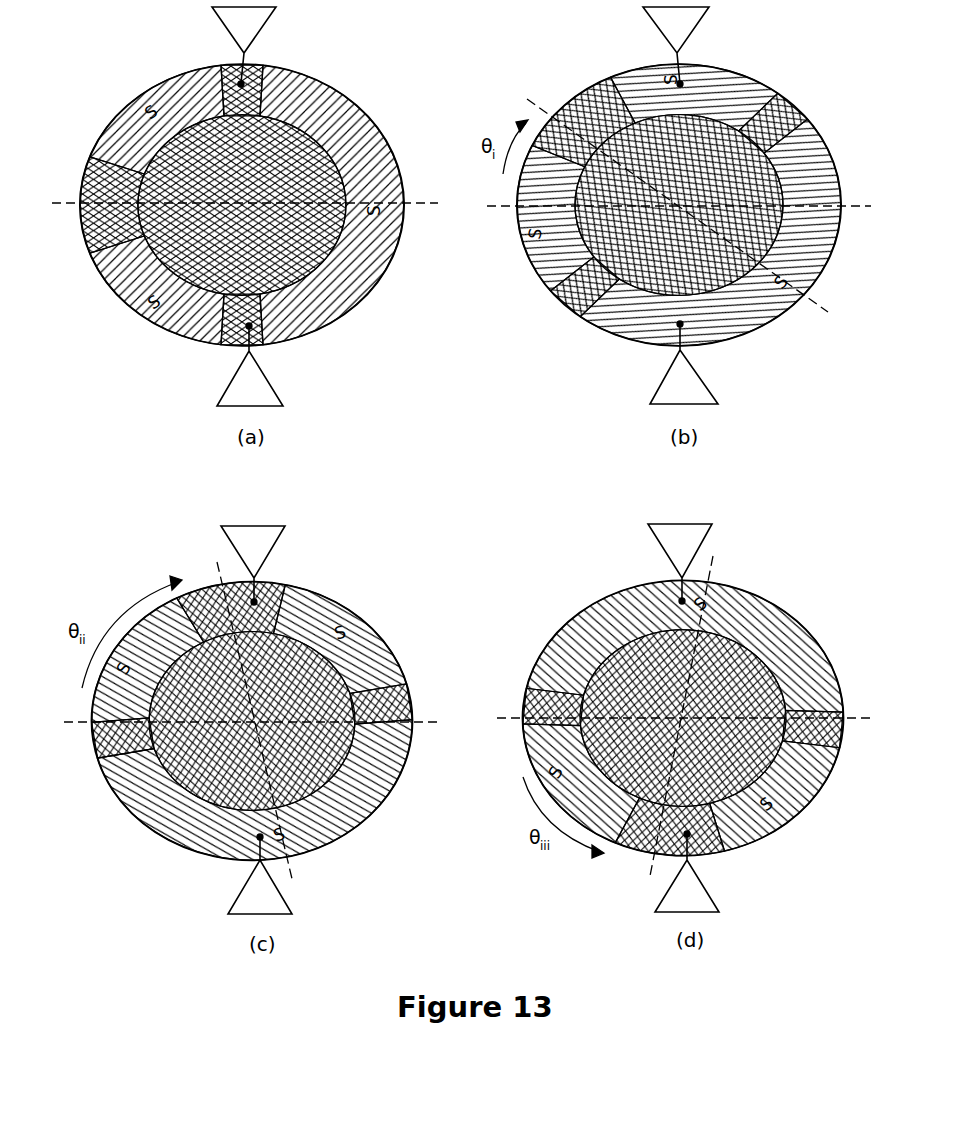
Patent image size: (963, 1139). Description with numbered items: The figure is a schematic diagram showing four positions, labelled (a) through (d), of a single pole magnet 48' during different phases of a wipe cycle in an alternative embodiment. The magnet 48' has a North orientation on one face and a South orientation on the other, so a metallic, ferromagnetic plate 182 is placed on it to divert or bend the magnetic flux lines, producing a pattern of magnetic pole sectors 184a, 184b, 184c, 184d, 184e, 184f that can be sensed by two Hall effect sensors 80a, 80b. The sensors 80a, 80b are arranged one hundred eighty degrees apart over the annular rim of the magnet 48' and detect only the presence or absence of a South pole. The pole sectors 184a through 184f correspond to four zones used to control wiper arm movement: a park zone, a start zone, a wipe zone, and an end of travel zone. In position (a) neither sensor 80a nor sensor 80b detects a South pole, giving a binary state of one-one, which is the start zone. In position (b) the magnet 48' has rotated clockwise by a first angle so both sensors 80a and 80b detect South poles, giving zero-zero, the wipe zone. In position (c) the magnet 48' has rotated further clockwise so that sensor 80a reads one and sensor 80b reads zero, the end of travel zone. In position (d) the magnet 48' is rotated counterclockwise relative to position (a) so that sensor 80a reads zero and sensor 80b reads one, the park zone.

The single pole magnet 48' is at (489, 442).
The metallic plate 182 is at (98, 232).
The magnetic pole sector 184a is at (88, 174).
The magnetic pole sector 184b is at (118, 112).
The magnetic pole sector 184c is at (258, 66).
The magnetic pole sector 184d is at (362, 116).
The magnetic pole sector 184e is at (101, 757).
The magnetic pole sector 184f is at (167, 326).
The Hall effect sensor 80a is at (276, 10).
The Hall effect sensor 80b is at (283, 404).